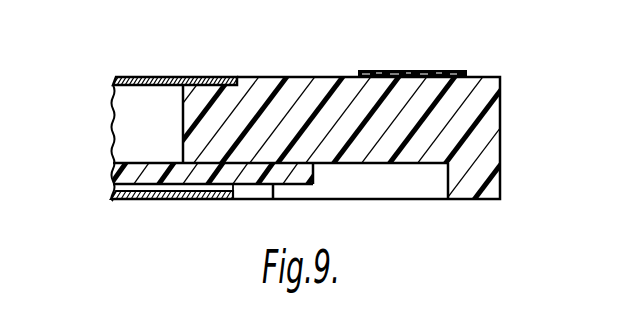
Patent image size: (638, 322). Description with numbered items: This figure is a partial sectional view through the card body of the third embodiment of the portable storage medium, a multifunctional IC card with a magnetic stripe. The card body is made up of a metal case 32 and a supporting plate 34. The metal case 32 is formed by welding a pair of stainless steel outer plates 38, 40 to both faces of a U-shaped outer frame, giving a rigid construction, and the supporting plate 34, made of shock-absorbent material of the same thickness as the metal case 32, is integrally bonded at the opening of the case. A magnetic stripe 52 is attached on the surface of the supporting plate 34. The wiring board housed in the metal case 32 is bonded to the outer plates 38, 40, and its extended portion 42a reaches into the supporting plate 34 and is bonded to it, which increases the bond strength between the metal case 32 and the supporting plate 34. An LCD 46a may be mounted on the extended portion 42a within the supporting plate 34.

The metal case 32 is at (104, 110).
The supporting plate 34 is at (476, 118).
The outer plate 38 is at (143, 77).
The outer plate 40 is at (173, 201).
The extended portion 42a is at (121, 172).
The LCD 46a is at (398, 182).
The magnetic stripe 52 is at (433, 72).